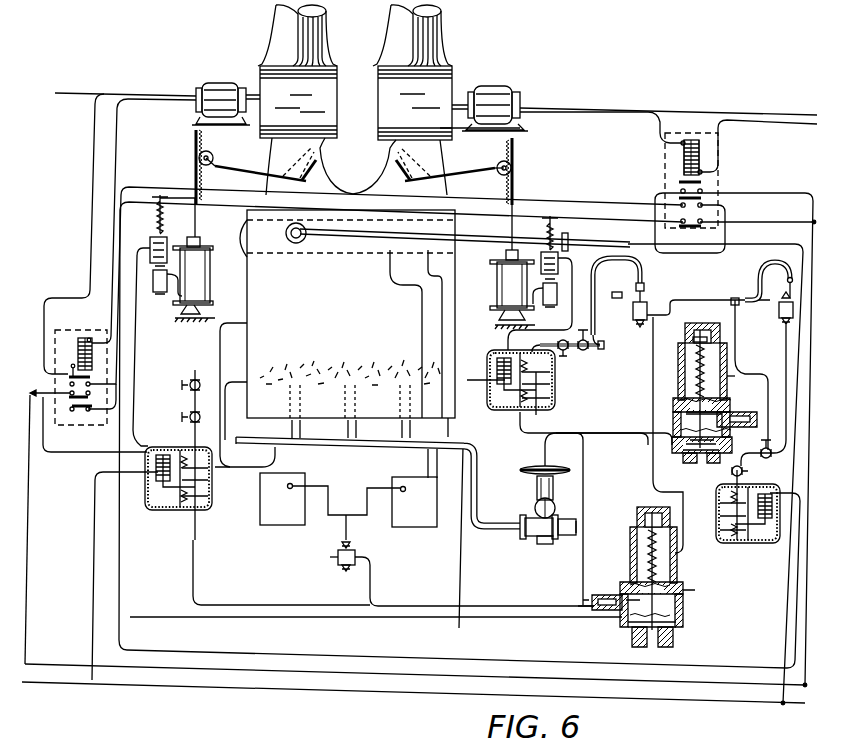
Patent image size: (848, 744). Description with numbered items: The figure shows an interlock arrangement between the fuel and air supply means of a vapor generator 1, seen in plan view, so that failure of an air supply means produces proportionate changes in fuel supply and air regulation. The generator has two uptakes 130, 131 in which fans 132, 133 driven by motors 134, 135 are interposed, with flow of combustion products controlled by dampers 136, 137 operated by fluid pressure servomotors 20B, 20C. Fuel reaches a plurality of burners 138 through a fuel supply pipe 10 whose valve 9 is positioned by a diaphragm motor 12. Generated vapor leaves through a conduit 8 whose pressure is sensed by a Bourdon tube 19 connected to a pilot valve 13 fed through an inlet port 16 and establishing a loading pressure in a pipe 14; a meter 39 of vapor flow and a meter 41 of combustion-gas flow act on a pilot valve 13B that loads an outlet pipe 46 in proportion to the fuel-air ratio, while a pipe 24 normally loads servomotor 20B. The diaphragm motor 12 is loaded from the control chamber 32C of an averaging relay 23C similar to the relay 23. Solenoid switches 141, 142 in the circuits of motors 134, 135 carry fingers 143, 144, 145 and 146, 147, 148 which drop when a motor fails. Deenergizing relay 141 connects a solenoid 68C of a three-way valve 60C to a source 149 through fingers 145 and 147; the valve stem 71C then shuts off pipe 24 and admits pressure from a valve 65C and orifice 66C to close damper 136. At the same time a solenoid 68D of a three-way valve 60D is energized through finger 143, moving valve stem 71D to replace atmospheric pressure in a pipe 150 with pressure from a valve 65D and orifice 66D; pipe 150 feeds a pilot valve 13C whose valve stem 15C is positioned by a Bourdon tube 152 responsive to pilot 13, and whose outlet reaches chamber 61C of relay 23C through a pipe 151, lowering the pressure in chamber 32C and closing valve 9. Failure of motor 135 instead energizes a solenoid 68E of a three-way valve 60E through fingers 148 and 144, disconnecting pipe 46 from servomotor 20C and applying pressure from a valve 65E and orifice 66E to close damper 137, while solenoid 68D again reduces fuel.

The uptake 130 is at (322, 48).
The uptake 131 is at (442, 47).
The fan 132 is at (333, 96).
The fan 133 is at (452, 86).
The motor 134 is at (240, 80).
The motor 135 is at (518, 92).
The damper 136 is at (320, 158).
The damper 137 is at (395, 155).
The burners 138 is at (302, 408).
The solenoid switch 142 is at (684, 163).
The finger 146 is at (703, 183).
The finger 148 is at (703, 198).
The finger 147 is at (703, 227).
The solenoid switch 141 is at (85, 336).
The finger 143 is at (66, 381).
The finger 144 is at (66, 398).
The finger 145 is at (86, 414).
The fluid pressure servomotor 20B is at (186, 320).
The fluid pressure servomotor 20C is at (531, 277).
The conduit 8 is at (568, 254).
The vapor generator 1 is at (245, 352).
The Bourdon tube 19 is at (638, 262).
The inlet port 16 is at (645, 288).
The pilot valve 13 is at (648, 308).
The pipe 14 is at (652, 386).
The Bourdon tube 152 is at (754, 276).
The valve stem 15C is at (792, 302).
The pilot valve 13C is at (793, 311).
The pipe 150 is at (786, 362).
The pipe 151 is at (770, 380).
The averaging relay 23C is at (722, 324).
The chamber 61C is at (690, 412).
The control chamber 32C is at (690, 462).
The valve 65E is at (588, 352).
The orifice 66E is at (566, 354).
The solenoid 68E is at (503, 358).
The three-way valve 60E is at (552, 392).
The valve 65C is at (190, 380).
The orifice 66C is at (190, 412).
The solenoid 68C is at (162, 455).
The valve stem 71C is at (205, 482).
The three-way valve 60C is at (208, 494).
The diaphragm motor 12 is at (530, 456).
The fuel supply pipe 10 is at (563, 519).
The valve 9 is at (546, 544).
The meter 39 is at (288, 472).
The meter 41 is at (446, 513).
The pilot valve 13B is at (356, 556).
The outlet pipe 46 is at (446, 606).
The pipe 24 is at (446, 618).
The source 149 is at (270, 685).
The relay 23 is at (641, 510).
The valve 65D is at (770, 448).
The orifice 66D is at (748, 465).
The solenoid 68D is at (784, 484).
The valve stem 71D is at (728, 504).
The three-way valve 60D is at (755, 544).